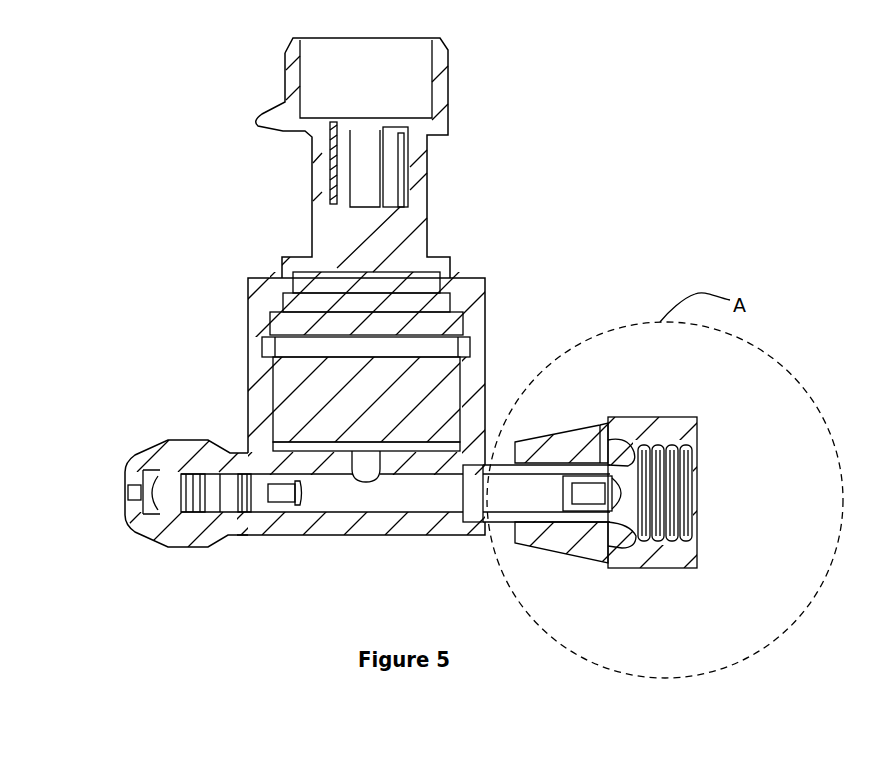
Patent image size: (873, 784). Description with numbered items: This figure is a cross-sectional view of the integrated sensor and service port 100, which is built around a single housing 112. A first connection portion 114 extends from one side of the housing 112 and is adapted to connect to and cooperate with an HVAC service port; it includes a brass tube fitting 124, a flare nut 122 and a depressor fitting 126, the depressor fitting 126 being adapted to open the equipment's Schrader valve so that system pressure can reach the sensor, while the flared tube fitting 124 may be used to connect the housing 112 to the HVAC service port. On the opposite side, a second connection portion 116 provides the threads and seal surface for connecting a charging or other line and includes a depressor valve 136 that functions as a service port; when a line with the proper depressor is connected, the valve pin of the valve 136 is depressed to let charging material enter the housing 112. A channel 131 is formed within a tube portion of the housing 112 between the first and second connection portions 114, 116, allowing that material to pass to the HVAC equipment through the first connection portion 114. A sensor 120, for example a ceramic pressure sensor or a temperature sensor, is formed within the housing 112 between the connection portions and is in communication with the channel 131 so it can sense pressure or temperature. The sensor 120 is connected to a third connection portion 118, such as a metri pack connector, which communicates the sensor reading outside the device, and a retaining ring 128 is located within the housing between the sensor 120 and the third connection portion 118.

The integrated sensor and service port 100 is at (68, 245).
The housing 112 is at (250, 357).
The first connection portion 114 is at (695, 673).
The second connection portion 116 is at (97, 783).
The third connection portion 118 is at (449, 82).
The sensor 120 is at (287, 397).
The flare nut 122 is at (699, 428).
The tube fitting 124 is at (597, 468).
The depressor fitting 126 is at (640, 494).
The retaining ring 128 is at (458, 345).
The channel 131 is at (322, 535).
The valve 136 is at (182, 783).